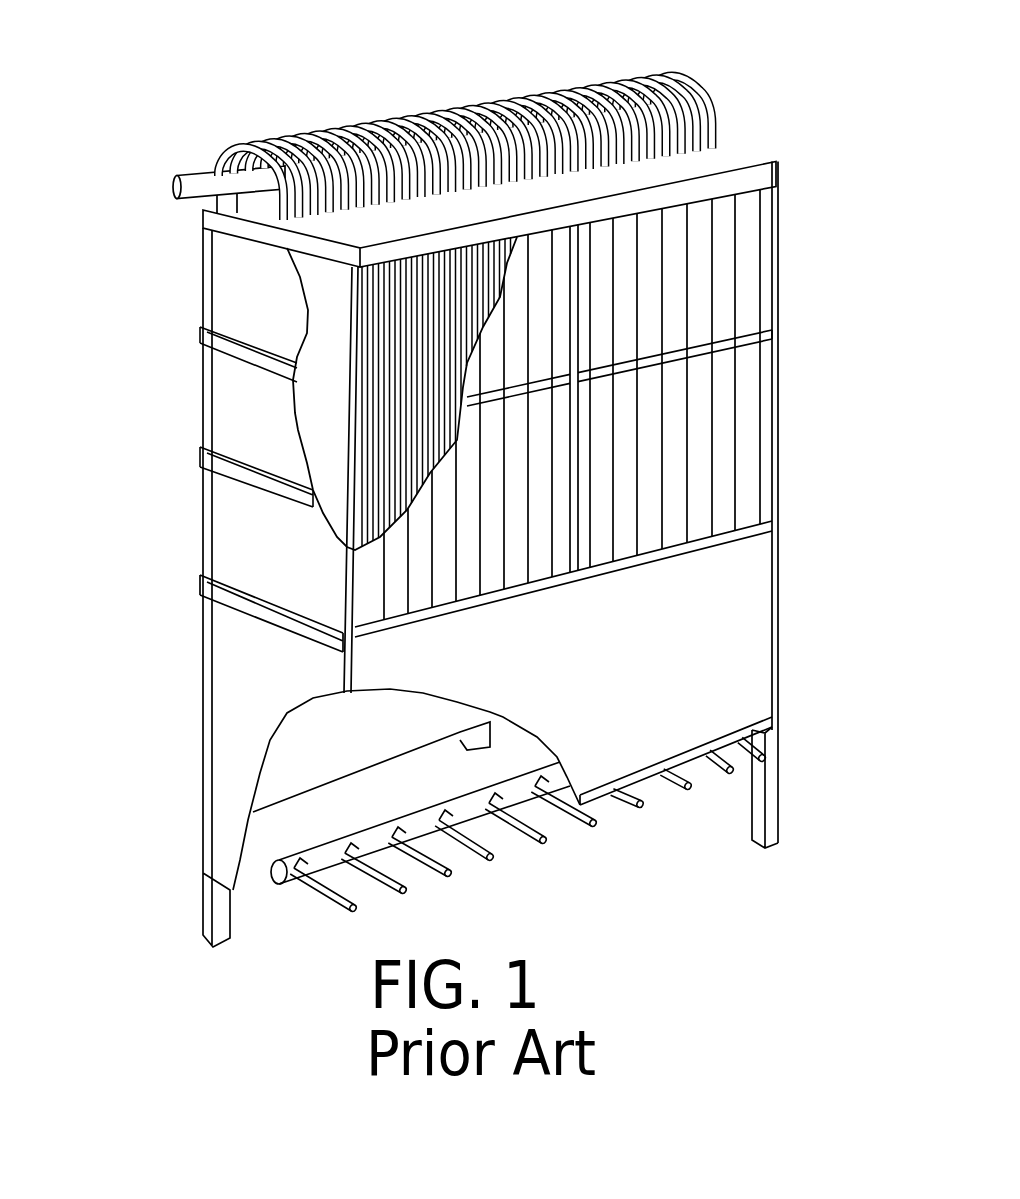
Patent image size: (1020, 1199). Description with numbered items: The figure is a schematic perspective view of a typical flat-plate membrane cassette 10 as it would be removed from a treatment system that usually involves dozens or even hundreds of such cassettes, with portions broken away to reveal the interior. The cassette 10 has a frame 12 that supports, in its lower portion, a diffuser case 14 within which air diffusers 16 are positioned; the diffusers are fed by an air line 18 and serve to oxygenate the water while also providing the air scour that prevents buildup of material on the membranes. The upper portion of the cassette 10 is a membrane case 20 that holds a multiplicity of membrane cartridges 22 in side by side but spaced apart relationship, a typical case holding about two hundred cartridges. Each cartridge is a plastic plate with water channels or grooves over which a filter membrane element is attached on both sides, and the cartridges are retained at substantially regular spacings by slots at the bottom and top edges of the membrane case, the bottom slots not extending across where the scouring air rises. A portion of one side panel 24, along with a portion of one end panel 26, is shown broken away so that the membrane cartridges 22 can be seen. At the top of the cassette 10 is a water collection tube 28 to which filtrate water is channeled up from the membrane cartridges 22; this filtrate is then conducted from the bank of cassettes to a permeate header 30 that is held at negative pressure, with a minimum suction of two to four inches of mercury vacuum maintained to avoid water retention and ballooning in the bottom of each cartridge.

The membrane cassette 10 is at (480, 475).
The frame 12 is at (210, 399).
The diffuser case 14 is at (663, 710).
The air diffusers 16 is at (535, 833).
The air line 18 is at (283, 855).
The membrane case 20 is at (795, 243).
The membrane cartridges 22 is at (390, 298).
The side panel 24 is at (393, 567).
The end panel 26 is at (265, 408).
The water collection tube 28 is at (493, 102).
The permeate header 30 is at (203, 172).